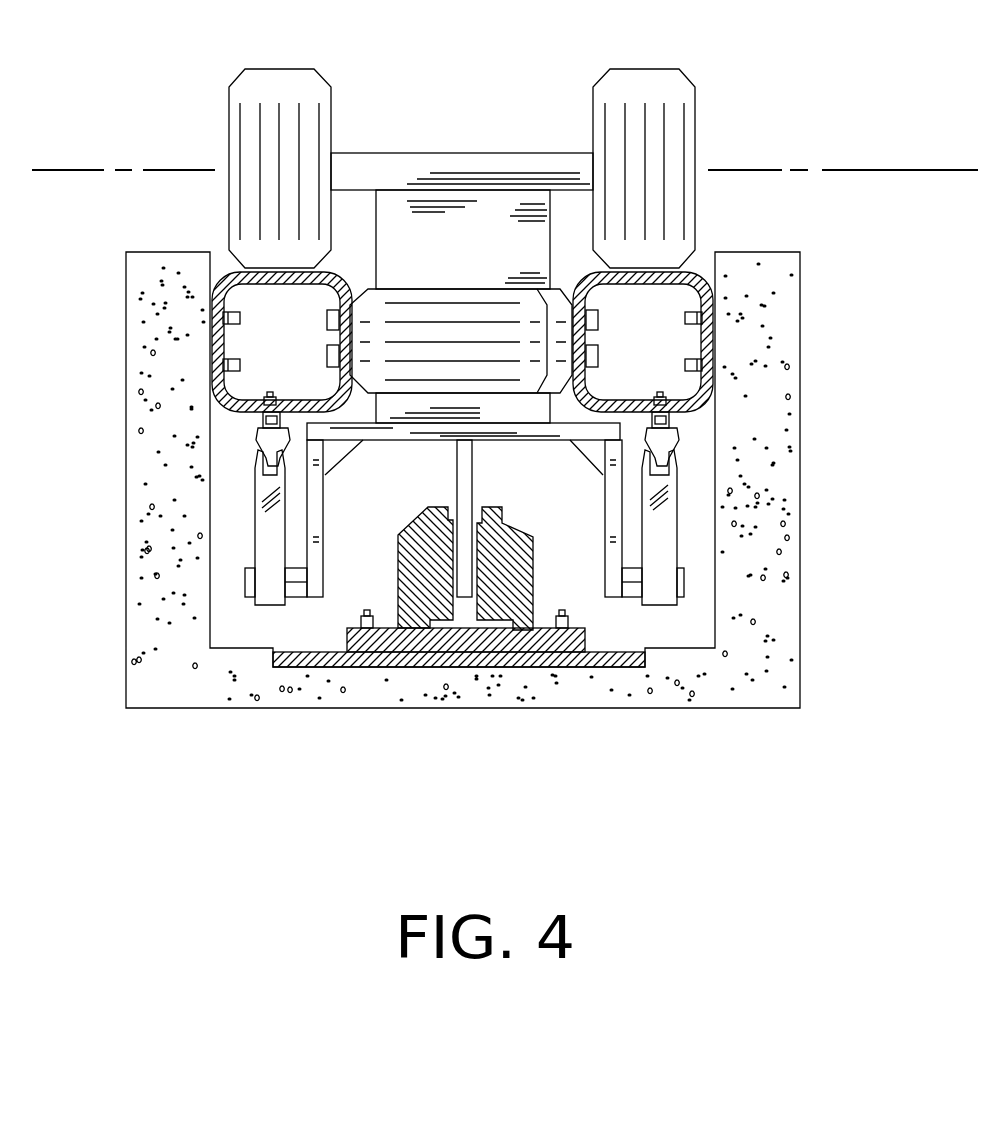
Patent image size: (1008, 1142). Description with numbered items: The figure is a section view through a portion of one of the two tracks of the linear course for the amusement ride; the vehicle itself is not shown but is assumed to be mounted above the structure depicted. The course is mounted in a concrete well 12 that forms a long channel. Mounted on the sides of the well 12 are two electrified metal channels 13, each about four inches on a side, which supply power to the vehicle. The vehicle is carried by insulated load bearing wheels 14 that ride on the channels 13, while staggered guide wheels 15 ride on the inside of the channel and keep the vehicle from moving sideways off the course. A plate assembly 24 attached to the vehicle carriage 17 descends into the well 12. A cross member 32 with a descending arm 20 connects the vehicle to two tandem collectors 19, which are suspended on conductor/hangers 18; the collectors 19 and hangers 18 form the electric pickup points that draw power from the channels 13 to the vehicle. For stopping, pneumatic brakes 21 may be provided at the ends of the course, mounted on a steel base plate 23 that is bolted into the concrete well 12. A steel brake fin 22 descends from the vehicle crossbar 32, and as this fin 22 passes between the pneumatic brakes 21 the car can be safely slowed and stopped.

The concrete well 12 is at (692, 722).
The electrified metal channel 13 is at (302, 288).
The insulated load bearing wheel 14 is at (280, 63).
The guide wheel 15 is at (392, 287).
The vehicle carriage 17 is at (415, 150).
The conductor/hanger 18 is at (249, 432).
The tandem collector 19 is at (249, 530).
The descending arm 20 is at (328, 522).
The pneumatic brake 21 is at (540, 557).
The steel brake fin 22 is at (475, 497).
The steel base plate 23 is at (328, 647).
The plate assembly 24 is at (372, 215).
The cross member 32 is at (375, 445).